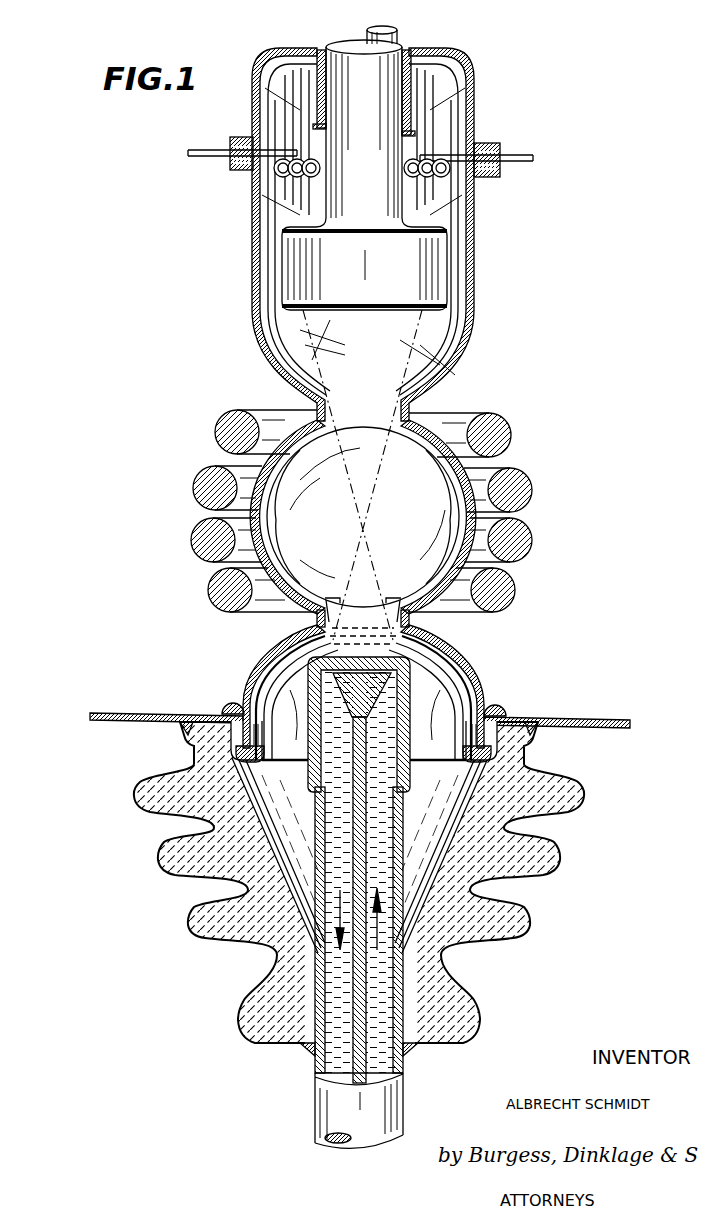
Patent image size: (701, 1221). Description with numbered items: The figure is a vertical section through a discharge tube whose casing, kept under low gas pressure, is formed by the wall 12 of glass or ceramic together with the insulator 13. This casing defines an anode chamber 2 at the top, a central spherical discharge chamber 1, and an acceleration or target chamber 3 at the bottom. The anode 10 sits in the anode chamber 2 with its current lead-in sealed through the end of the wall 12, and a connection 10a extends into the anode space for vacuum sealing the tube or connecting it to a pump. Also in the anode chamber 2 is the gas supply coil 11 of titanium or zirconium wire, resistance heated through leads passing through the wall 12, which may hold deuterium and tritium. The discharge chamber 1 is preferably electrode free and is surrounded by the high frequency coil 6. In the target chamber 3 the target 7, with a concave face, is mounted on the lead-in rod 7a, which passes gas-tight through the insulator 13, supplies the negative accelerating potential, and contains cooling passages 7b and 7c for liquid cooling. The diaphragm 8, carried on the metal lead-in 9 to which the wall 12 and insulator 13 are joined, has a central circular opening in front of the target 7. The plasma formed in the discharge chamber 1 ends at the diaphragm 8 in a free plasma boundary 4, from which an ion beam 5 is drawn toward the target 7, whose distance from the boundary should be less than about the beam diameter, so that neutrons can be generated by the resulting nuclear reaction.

The discharge chamber 1 is at (420, 417).
The anode chamber 2 is at (316, 334).
The acceleration or target chamber 3 is at (480, 696).
The plasma boundary 4 is at (363, 620).
The ion beam 5 is at (298, 646).
The high frequency coil 6 is at (530, 476).
The target 7 is at (440, 660).
The lead-in rod 7a is at (366, 1127).
The cooling passage 7b is at (390, 1075).
The cooling passage 7c is at (322, 1076).
The diaphragm 8 is at (262, 684).
The metal lead-in 9 is at (128, 713).
The anode 10 is at (440, 318).
The connection 10a is at (400, 38).
The gas supply coil 11 is at (420, 160).
The wall 12 is at (252, 222).
The insulator 13 is at (287, 972).